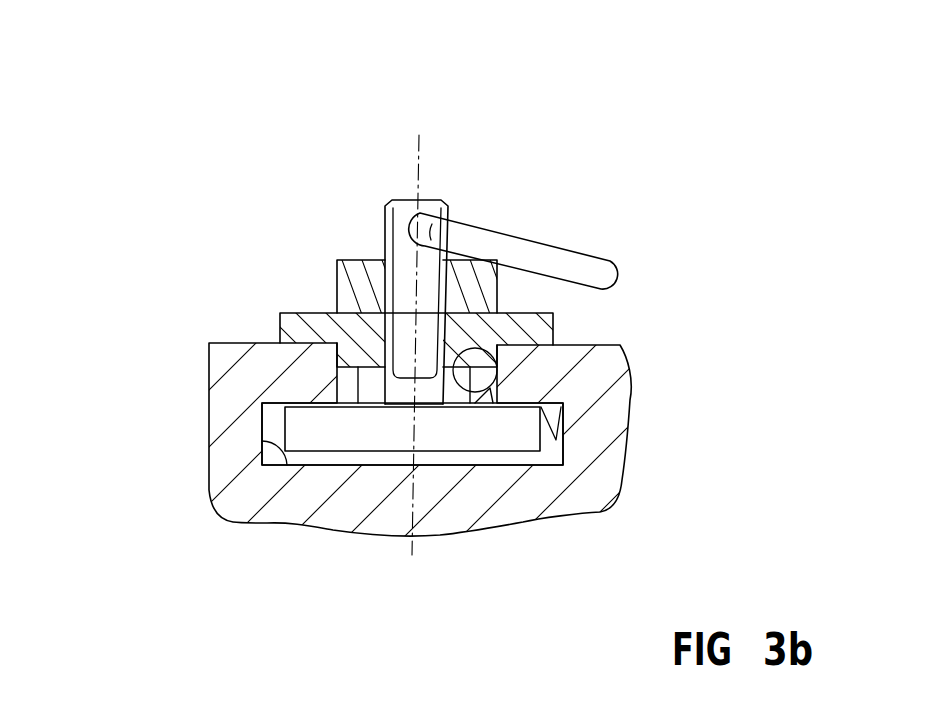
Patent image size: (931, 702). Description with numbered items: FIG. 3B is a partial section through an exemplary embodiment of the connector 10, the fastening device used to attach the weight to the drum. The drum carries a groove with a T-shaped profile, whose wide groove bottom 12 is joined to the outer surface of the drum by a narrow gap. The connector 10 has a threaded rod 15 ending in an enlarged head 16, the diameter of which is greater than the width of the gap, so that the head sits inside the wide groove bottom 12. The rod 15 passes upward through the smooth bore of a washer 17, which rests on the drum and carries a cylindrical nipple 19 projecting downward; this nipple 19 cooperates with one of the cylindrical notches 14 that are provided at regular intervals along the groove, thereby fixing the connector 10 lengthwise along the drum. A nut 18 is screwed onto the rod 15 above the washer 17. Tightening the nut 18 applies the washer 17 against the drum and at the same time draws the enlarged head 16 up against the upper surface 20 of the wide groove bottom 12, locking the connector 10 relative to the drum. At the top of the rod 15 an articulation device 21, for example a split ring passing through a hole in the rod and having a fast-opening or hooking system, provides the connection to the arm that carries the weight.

The connector 10 is at (293, 220).
The wide groove bottom 12 is at (262, 441).
The cylindrical notch 14 is at (455, 345).
The rod 15 is at (405, 268).
The enlarged head 16 is at (382, 428).
The washer 17 is at (320, 332).
The nut 18 is at (463, 285).
The cylindrical nipple 19 is at (350, 358).
The upper surface 20 is at (557, 407).
The articulation device 21 is at (615, 260).